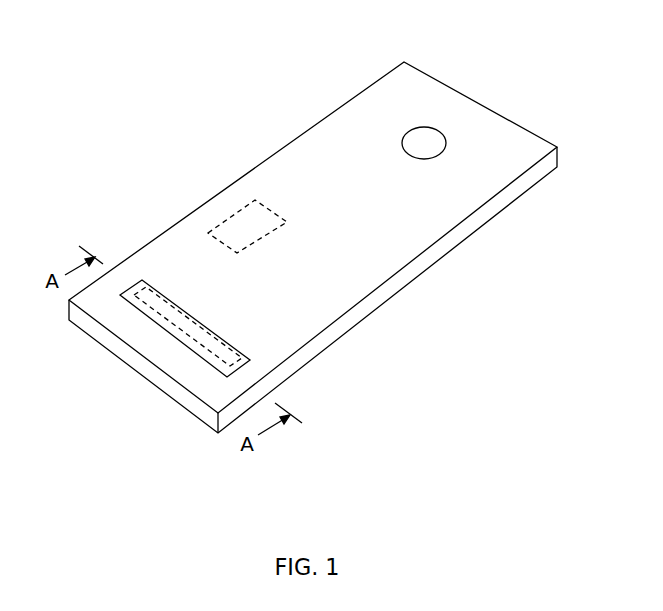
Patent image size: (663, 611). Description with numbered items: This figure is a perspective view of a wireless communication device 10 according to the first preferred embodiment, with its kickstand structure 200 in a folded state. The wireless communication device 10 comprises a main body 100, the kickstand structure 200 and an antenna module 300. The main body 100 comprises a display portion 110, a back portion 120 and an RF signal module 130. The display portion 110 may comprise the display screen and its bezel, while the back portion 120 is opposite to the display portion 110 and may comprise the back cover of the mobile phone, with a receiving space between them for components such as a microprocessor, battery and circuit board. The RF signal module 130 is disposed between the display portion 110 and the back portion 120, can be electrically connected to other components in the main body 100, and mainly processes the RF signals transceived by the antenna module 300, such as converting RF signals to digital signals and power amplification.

The wireless communication device 10 is at (322, 227).
The main body 100 is at (322, 240).
The display portion 110 is at (505, 208).
The back portion 120 is at (337, 132).
The RF signal module 130 is at (243, 223).
The kickstand structure 200 is at (204, 276).
The antenna module 300 is at (210, 341).